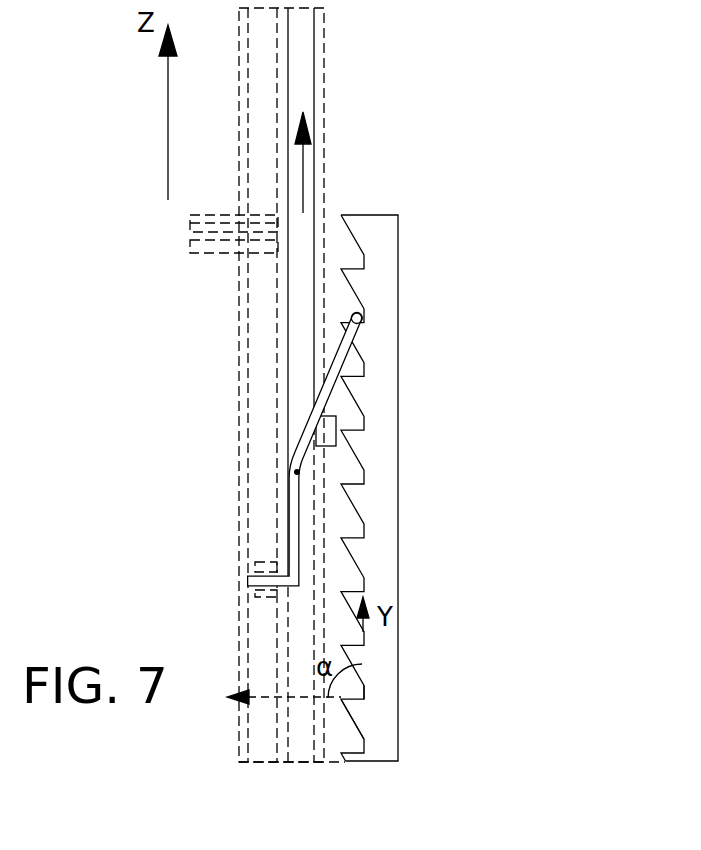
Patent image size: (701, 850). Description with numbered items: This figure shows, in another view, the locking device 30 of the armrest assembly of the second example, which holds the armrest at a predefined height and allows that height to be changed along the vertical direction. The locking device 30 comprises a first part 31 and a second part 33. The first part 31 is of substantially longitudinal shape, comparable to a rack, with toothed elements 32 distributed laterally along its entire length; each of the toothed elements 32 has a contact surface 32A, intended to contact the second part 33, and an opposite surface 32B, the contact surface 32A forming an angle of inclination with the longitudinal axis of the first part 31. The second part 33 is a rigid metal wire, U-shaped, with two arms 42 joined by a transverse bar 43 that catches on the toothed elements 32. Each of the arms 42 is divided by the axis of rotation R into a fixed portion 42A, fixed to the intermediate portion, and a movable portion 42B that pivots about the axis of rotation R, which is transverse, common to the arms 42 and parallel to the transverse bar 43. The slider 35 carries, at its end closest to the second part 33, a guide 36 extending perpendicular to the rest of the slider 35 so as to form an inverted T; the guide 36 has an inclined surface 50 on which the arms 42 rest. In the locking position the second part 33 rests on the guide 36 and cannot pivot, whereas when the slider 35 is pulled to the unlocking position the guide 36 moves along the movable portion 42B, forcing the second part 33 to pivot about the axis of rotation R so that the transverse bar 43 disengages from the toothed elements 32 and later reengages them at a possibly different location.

The locking device 30 is at (380, 330).
The first part 31 is at (423, 502).
The toothed elements 32 is at (350, 557).
The contact surface 32A is at (363, 681).
The opposite surface 32B is at (362, 738).
The second part 33 is at (327, 383).
The slider 35 is at (298, 70).
The guide 36 is at (327, 423).
The arms 42 is at (293, 533).
The fixed portion 42A is at (294, 519).
The movable portion 42B is at (337, 365).
The transverse bar 43 is at (362, 318).
The surface 50 is at (306, 458).
The axis of rotation R is at (297, 472).